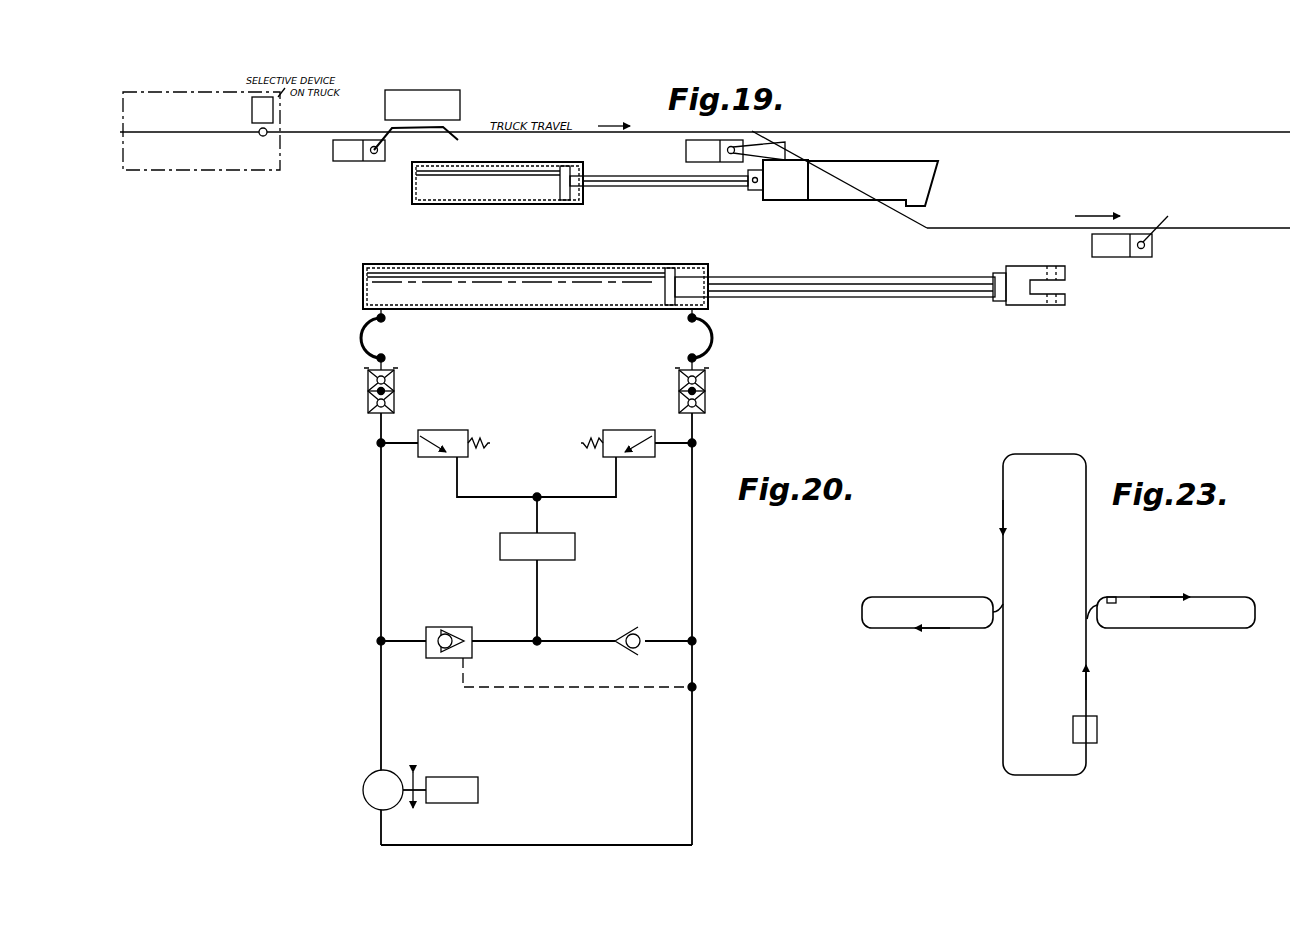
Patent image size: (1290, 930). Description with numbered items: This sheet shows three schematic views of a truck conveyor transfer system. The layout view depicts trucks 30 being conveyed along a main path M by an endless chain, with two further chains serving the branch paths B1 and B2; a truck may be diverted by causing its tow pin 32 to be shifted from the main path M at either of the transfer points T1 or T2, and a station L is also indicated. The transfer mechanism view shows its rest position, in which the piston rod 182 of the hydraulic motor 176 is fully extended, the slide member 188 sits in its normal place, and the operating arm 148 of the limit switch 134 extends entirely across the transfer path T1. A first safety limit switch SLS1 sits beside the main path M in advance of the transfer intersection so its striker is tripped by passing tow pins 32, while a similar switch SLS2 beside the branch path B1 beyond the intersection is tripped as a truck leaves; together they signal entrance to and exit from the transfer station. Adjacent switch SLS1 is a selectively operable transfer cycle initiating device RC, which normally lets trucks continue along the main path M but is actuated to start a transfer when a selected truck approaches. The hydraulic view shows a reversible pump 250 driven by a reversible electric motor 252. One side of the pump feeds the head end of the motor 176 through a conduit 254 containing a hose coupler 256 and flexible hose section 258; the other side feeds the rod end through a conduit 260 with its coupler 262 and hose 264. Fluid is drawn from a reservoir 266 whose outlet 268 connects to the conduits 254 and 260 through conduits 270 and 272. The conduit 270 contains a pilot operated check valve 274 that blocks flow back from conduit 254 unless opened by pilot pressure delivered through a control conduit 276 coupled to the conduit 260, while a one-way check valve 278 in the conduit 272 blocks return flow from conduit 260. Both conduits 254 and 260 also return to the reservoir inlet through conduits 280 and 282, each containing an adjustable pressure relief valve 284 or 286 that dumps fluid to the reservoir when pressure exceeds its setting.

In FIG. 19, the truck 30 is at (212, 170).
In FIG. 19, the tow pin 32 is at (266, 136).
In FIG. 19, the first safety limit switch SLS1 is at (371, 162).
In FIG. 19, the selectively operable transfer cycle initiating device RC is at (422, 105).
In FIG. 19, the motor 176 is at (519, 168).
In FIG. 20, the motor 176 is at (594, 264).
In FIG. 19, the piston rod 182 is at (622, 176).
In FIG. 20, the piston rod 182 is at (791, 278).
In FIG. 19, the limit switch 134 is at (686, 148).
In FIG. 19, the operating arm 148 is at (788, 145).
In FIG. 19, the slide member 188 is at (905, 178).
In FIG. 19, the transfer path T1 is at (876, 190).
In FIG. 23, the transfer path T1 is at (1090, 621).
In FIG. 19, the main path M is at (1050, 132).
In FIG. 23, the main path M is at (1086, 556).
In FIG. 19, the branch path B1 is at (1016, 227).
In FIG. 23, the branch path B1 is at (1230, 602).
In FIG. 19, the second safety limit switch SLS2 is at (1110, 258).
In FIG. 20, the flexible hose section 258 is at (361, 337).
In FIG. 20, the flexible hose section 264 is at (712, 338).
In FIG. 20, the hose coupler 256 is at (367, 393).
In FIG. 20, the hose coupler 262 is at (708, 393).
In FIG. 20, the conduit 254 is at (380, 578).
In FIG. 20, the conduit 260 is at (694, 580).
In FIG. 20, the adjustable pressure relief valve 284 is at (449, 429).
In FIG. 20, the adjustable pressure relief valve 286 is at (634, 414).
In FIG. 20, the conduit 280 is at (460, 480).
In FIG. 20, the conduit 282 is at (572, 495).
In FIG. 20, the reservoir 266 is at (577, 546).
In FIG. 20, the outlet 268 is at (539, 600).
In FIG. 20, the pilot operated check valve 274 is at (440, 625).
In FIG. 20, the conduit 270 is at (498, 645).
In FIG. 20, the conduit 272 is at (598, 640).
In FIG. 20, the one-way check valve 278 is at (623, 652).
In FIG. 20, the control conduit 276 is at (549, 689).
In FIG. 20, the reversible pump 250 is at (370, 776).
In FIG. 20, the reversible electric motor 252 is at (480, 777).
In FIG. 23, the branch path B2 is at (934, 595).
In FIG. 23, the transfer path T2 is at (1003, 611).
In FIG. 23, the loading station L is at (1097, 725).